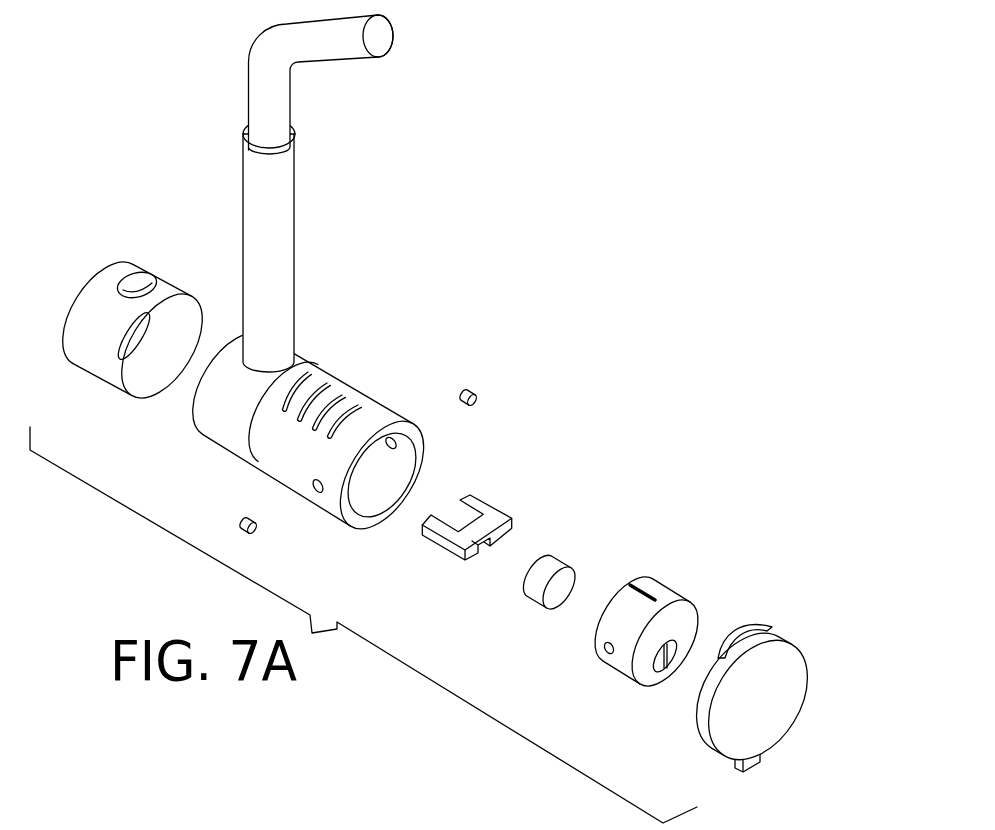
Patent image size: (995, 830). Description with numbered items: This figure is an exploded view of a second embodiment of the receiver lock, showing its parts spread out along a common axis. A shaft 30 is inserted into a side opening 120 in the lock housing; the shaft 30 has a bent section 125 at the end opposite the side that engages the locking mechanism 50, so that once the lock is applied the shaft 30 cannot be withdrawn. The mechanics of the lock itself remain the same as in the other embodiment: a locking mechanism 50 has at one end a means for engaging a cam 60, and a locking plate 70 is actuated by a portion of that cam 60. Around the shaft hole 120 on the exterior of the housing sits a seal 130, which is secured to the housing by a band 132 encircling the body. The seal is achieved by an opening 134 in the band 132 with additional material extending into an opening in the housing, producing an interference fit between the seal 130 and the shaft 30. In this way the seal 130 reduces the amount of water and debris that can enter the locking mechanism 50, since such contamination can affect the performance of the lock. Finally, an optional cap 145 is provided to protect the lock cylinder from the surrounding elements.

The bent section 125 is at (285, 52).
The shaft 30 is at (321, 422).
The side opening 120 is at (318, 422).
The seal 130 is at (133, 340).
The band 132 is at (153, 370).
The opening 134 is at (135, 282).
The locking plate 70 is at (482, 498).
The cam 60 is at (547, 563).
The locking mechanism 50 is at (650, 582).
The cap 145 is at (767, 730).